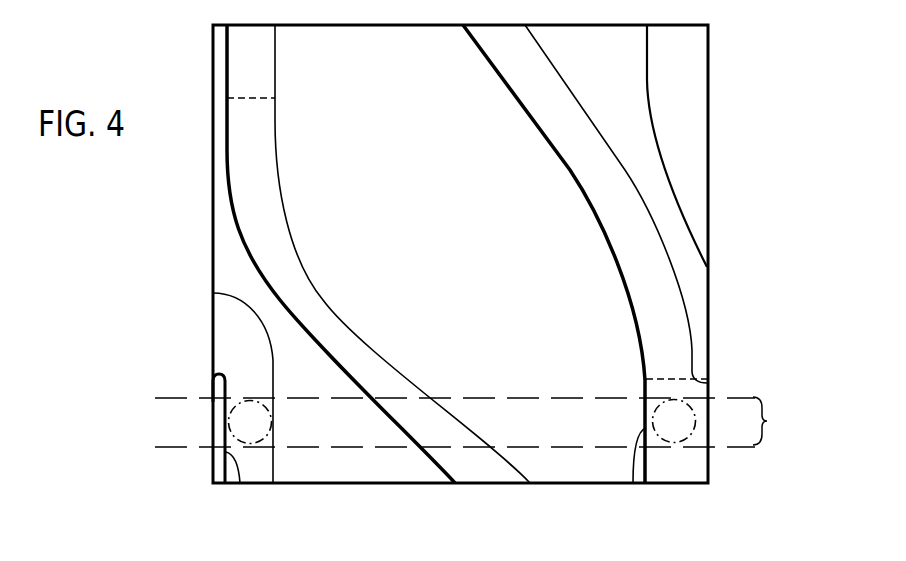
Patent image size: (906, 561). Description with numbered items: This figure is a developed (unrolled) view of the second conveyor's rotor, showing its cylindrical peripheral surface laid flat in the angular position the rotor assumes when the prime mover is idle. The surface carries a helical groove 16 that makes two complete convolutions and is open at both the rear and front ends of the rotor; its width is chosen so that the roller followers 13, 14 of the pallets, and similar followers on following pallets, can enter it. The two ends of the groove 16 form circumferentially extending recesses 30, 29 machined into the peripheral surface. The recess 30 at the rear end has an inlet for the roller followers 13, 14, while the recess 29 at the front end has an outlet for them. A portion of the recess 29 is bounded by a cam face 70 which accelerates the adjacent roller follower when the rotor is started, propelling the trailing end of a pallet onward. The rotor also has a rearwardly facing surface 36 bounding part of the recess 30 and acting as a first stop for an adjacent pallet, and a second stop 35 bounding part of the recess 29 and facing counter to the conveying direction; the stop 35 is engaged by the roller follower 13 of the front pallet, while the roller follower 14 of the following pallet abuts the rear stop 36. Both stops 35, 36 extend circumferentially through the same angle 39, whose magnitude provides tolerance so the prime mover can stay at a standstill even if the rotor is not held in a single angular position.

The roller follower 13 is at (232, 398).
The roller follower 14 is at (708, 385).
The helical groove 16 is at (260, 245).
The recess 29 is at (240, 53).
The recess 30 is at (683, 64).
The second stop 35 is at (238, 488).
The surface 36 is at (634, 485).
The angle 39 is at (767, 421).
The cam face 70 is at (247, 314).